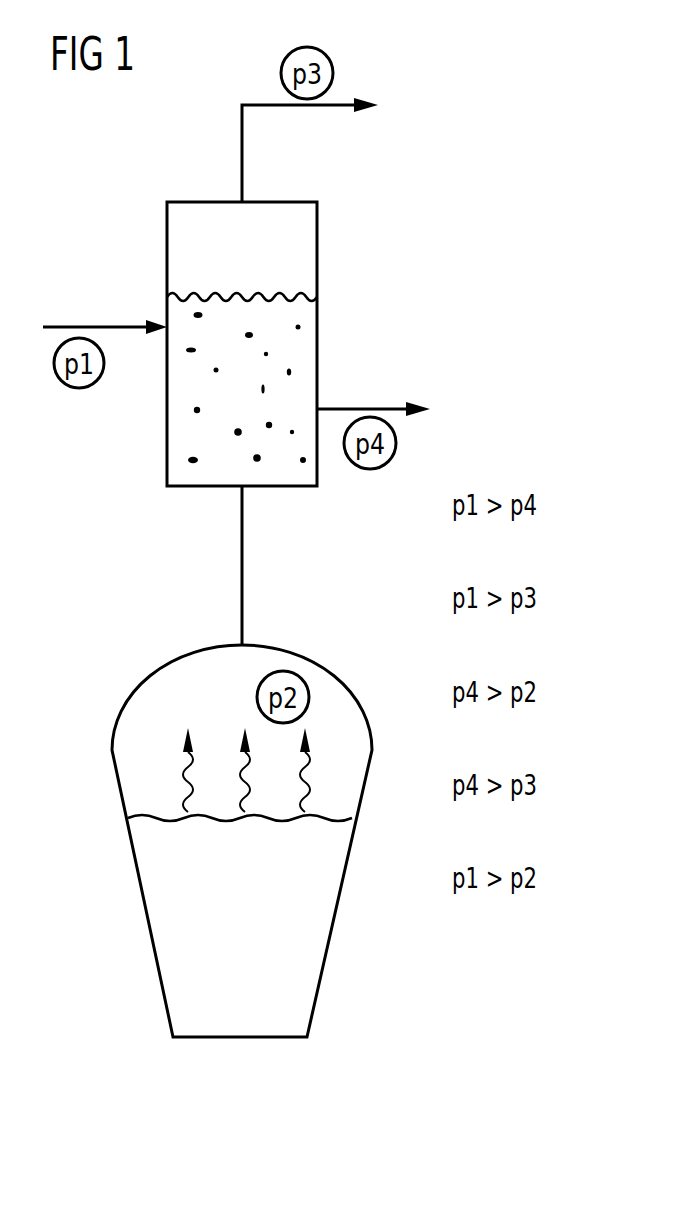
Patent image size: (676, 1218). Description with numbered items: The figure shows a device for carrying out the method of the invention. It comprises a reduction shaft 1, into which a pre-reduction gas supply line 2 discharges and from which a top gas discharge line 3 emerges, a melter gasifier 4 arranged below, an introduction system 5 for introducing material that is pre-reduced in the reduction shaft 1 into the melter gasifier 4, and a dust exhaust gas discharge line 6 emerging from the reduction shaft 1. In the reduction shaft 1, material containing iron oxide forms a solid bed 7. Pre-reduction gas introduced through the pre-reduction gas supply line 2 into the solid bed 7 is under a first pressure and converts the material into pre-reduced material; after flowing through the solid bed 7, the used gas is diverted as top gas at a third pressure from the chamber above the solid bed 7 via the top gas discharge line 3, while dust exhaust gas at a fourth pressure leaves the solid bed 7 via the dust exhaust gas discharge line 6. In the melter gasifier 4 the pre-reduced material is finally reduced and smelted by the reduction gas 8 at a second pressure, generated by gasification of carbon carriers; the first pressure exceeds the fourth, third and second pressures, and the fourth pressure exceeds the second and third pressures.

The reduction shaft 1 is at (167, 242).
The pre-reduction gas supply line 2 is at (79, 323).
The top gas discharge line 3 is at (241, 153).
The melter gasifier 4 is at (333, 920).
The introduction system 5 is at (242, 566).
The dust exhaust gas discharge line 6 is at (363, 406).
The solid bed 7 is at (197, 424).
The reduction gas 8 is at (188, 757).